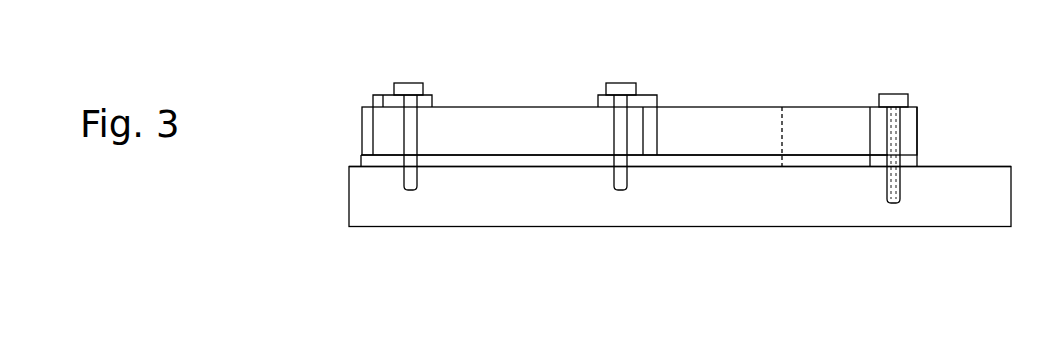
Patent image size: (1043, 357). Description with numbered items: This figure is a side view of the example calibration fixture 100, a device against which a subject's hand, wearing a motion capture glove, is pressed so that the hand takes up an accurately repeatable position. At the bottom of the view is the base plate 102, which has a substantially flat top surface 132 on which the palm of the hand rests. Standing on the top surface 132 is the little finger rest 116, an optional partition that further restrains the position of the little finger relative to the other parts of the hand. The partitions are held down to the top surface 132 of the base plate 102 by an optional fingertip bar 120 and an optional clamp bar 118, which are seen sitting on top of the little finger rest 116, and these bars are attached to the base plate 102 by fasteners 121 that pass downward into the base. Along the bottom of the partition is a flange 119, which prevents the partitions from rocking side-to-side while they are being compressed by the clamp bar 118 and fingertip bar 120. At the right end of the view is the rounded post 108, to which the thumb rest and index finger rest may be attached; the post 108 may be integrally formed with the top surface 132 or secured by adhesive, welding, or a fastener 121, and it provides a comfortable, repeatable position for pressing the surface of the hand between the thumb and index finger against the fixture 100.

The calibration fixture 100 is at (268, 72).
The base plate 102 is at (527, 227).
The rounded post 108 is at (916, 107).
The little finger rest 116 is at (508, 107).
The clamp bar 118 is at (428, 95).
The flange 119 is at (469, 155).
The fingertip bar 120 is at (650, 95).
The fastener 121 is at (413, 83).
The top surface 132 is at (949, 166).